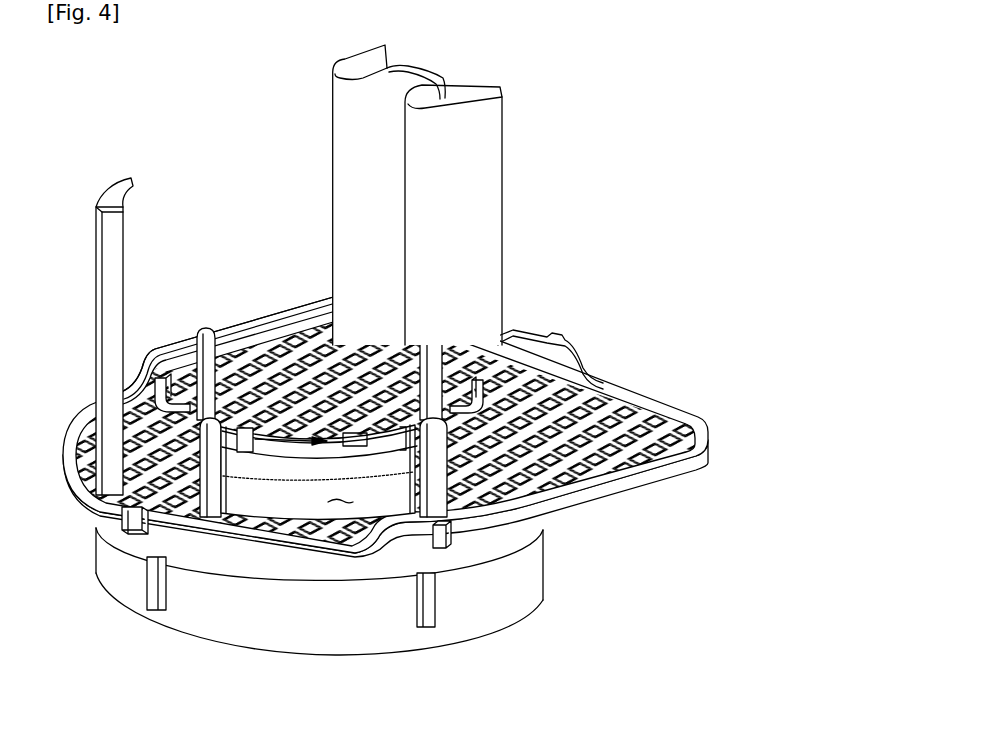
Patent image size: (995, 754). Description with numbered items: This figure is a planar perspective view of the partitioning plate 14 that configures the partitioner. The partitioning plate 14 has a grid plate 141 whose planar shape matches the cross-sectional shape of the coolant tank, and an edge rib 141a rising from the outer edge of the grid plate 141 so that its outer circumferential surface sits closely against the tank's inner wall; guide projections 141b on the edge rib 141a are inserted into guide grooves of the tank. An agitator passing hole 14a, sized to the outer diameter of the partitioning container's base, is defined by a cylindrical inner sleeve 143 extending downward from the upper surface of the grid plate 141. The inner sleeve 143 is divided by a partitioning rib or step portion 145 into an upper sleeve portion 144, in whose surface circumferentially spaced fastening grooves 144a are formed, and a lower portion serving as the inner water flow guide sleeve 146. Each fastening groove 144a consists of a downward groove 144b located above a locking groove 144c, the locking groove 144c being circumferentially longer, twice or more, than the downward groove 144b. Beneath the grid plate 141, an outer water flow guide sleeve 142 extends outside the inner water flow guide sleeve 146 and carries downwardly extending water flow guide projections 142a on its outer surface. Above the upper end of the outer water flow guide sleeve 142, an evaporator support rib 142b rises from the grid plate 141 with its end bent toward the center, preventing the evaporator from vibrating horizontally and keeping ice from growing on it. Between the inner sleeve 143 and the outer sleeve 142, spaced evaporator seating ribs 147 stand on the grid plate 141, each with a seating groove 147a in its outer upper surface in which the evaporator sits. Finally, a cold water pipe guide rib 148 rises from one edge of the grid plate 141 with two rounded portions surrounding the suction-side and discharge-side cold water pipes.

The partitioning plate 14 is at (578, 128).
The agitator passing hole 14a is at (343, 500).
The grid plate 141 is at (610, 450).
The edge rib 141a is at (598, 376).
The guide projections 141b is at (445, 535).
The outer water flow guide sleeve 142 is at (515, 597).
The water flow guide projections 142a is at (150, 578).
The evaporator support rib 142b is at (110, 185).
The inner sleeve 143 is at (319, 482).
The outer arc wall 144 is at (390, 444).
The fastening grooves 144a is at (318, 252).
The downward groove 144b is at (247, 428).
The locking groove 144c is at (308, 438).
The partitioning rib 145 is at (385, 437).
The inner water flow guide sleeve 146 is at (272, 462).
The evaporator seating ribs 147 is at (205, 358).
The seating groove 147a is at (175, 385).
The cold water pipe guide rib 148 is at (467, 93).